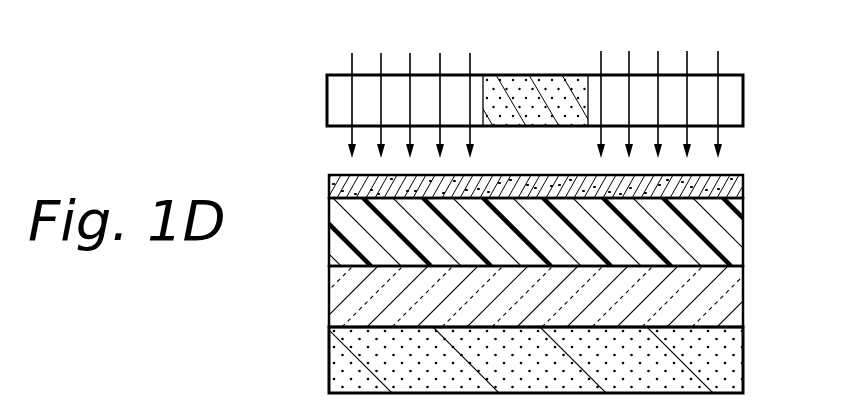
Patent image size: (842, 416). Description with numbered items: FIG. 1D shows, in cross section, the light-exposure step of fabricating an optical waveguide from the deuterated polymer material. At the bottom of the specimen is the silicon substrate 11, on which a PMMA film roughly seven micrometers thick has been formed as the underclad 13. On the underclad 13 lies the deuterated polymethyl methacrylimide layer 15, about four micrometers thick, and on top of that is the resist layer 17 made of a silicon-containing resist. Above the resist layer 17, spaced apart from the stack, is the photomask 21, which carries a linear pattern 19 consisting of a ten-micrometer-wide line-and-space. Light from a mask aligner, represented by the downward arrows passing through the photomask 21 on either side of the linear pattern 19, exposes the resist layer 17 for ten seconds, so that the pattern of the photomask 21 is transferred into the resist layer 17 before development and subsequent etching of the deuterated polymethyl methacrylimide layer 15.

The silicon substrate 11 is at (731, 350).
The underclad 13 is at (731, 292).
The deuterated polymethyl methacrylimide layer 15 is at (731, 231).
The resist layer 17 is at (731, 181).
The linear pattern 19 is at (528, 72).
The photomask 21 is at (731, 94).